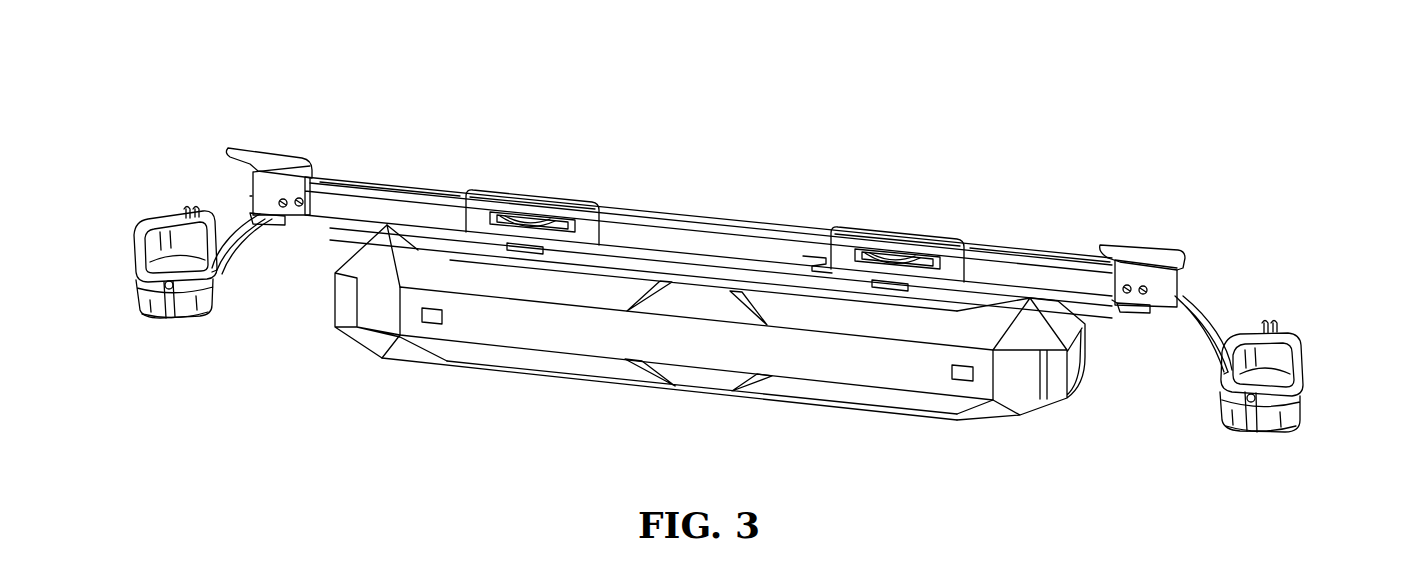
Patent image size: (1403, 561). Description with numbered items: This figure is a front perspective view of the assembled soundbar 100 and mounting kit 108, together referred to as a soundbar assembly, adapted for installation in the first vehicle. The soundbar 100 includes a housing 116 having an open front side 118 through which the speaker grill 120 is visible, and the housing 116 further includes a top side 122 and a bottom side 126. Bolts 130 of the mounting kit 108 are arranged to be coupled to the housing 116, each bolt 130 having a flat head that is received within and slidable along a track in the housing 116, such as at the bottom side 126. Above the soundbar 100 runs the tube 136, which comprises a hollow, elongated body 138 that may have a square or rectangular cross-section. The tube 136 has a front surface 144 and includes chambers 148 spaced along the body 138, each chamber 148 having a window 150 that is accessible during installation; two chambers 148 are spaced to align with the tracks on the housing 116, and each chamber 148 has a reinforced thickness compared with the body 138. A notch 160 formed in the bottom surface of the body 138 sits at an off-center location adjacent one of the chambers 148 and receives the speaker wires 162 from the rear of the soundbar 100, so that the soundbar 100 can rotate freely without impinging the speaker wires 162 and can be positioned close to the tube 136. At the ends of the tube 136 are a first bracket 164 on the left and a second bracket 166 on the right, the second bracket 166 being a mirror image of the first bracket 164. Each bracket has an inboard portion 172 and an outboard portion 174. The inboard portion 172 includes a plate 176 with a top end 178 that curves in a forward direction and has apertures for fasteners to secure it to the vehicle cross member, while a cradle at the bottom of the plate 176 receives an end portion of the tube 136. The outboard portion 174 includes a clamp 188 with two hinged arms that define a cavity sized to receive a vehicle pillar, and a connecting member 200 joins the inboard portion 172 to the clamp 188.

The soundbar 100 is at (672, 359).
The mounting kit 108 is at (212, 120).
The housing 116 is at (990, 420).
The open front side 118 is at (405, 357).
The speaker grill 120 is at (880, 360).
The top side 122 is at (410, 243).
The bottom side 126 is at (565, 375).
The bolt 130 is at (530, 217).
The tube 136 is at (708, 198).
The body 138 is at (385, 205).
The front surface 144 is at (1045, 246).
The chamber 148 is at (717, 192).
The window 150 is at (555, 222).
The notch 160 is at (812, 265).
The speaker wires 162 is at (1102, 310).
The first bracket 164 is at (210, 184).
The second bracket 166 is at (1215, 300).
The inboard portion 172 is at (688, 183).
The outboard portion 174 is at (135, 313).
The plate 176 is at (282, 183).
The top end 178 is at (258, 150).
The clamp 188 is at (130, 273).
The connecting member 200 is at (245, 270).